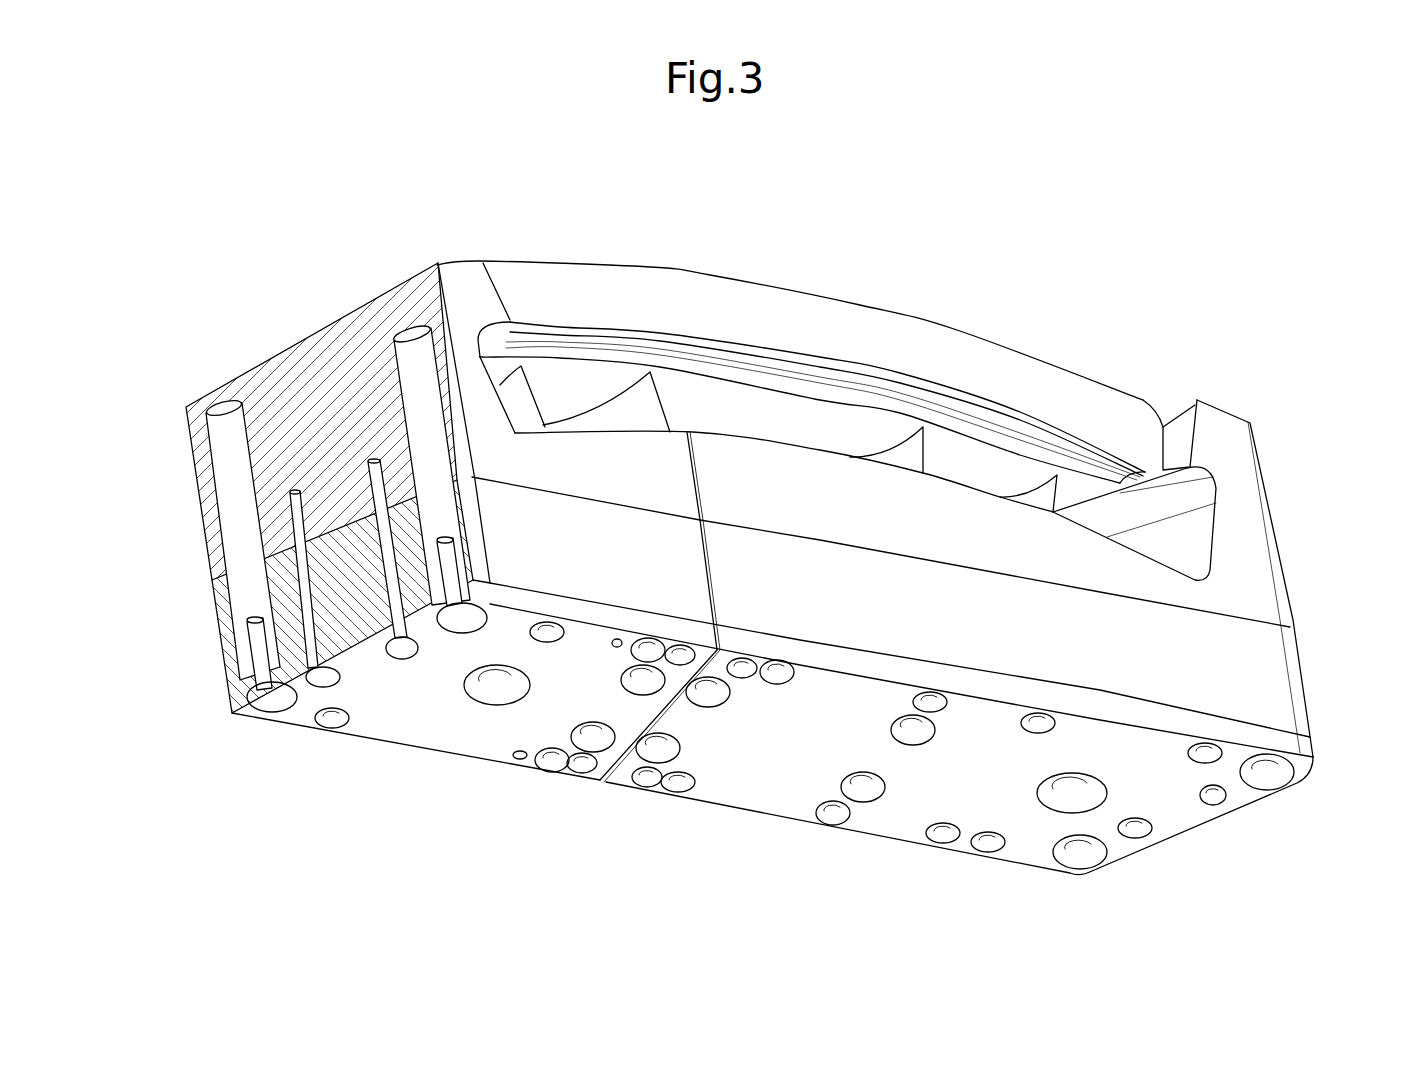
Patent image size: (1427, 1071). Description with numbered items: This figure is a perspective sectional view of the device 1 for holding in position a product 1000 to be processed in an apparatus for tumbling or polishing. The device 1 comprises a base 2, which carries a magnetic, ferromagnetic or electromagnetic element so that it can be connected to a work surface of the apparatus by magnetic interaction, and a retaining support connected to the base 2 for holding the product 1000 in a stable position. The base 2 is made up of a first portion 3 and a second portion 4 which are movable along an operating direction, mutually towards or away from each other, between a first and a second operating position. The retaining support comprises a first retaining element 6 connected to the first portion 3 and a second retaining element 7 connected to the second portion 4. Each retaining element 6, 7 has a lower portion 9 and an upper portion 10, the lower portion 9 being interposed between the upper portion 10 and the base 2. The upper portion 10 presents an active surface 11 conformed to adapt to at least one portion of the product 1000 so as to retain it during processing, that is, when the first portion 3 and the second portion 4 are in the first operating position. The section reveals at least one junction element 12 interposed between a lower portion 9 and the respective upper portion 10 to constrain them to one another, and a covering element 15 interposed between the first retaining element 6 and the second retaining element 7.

The device 1 is at (705, 541).
The base 2 is at (780, 703).
The first portion 3 is at (462, 730).
The second portion 4 is at (1140, 793).
The first retaining element 6 is at (183, 642).
The second retaining element 7 is at (1330, 601).
The lower portion 9 is at (1243, 680).
The upper portion 10 is at (1250, 570).
The active surface 11 is at (1178, 443).
The junction element 12 is at (448, 450).
The covering element 15 is at (855, 317).
The product 1000 is at (703, 380).